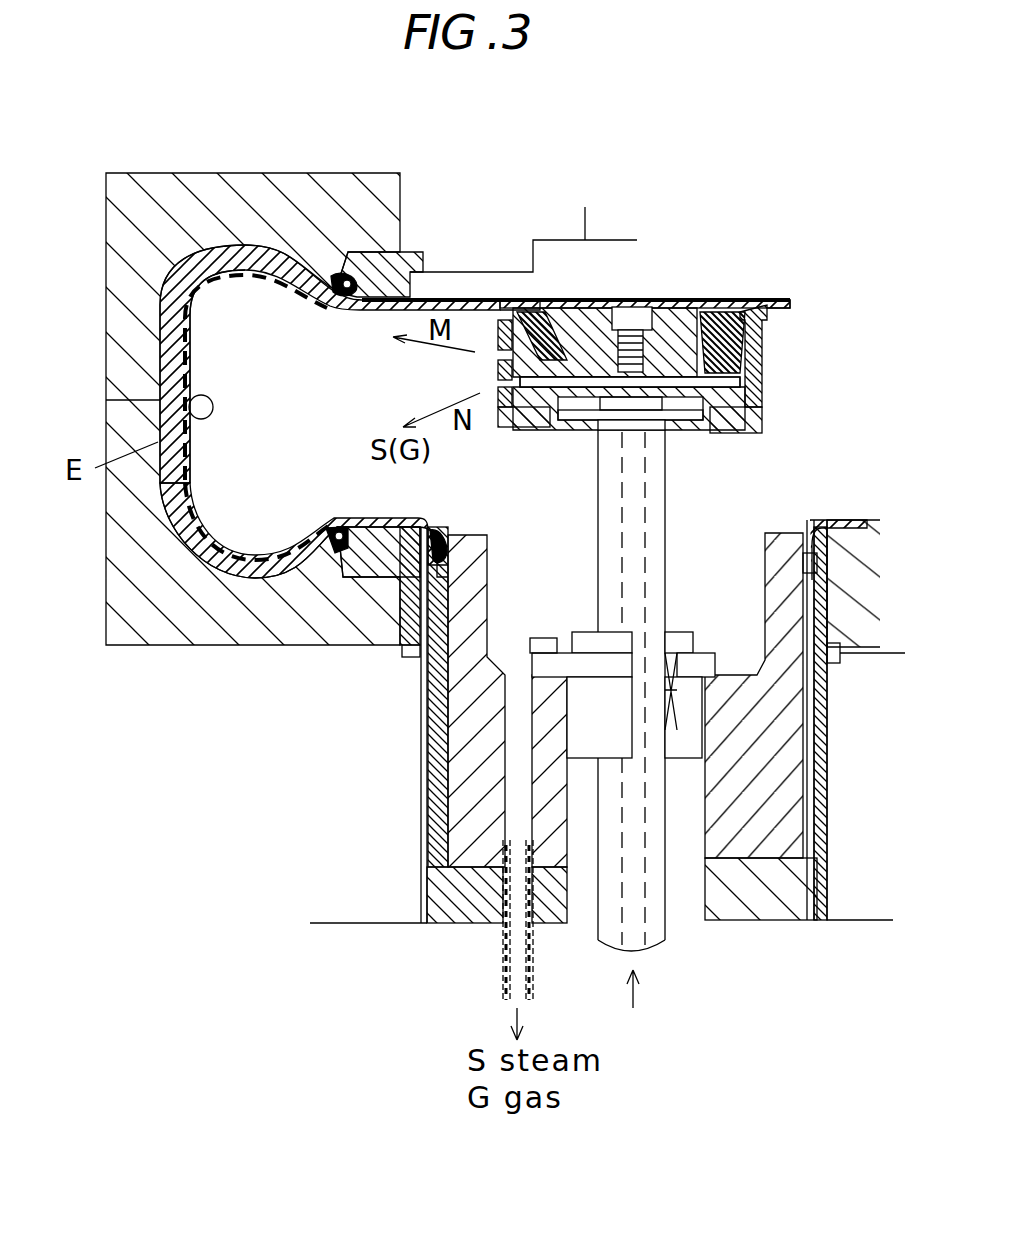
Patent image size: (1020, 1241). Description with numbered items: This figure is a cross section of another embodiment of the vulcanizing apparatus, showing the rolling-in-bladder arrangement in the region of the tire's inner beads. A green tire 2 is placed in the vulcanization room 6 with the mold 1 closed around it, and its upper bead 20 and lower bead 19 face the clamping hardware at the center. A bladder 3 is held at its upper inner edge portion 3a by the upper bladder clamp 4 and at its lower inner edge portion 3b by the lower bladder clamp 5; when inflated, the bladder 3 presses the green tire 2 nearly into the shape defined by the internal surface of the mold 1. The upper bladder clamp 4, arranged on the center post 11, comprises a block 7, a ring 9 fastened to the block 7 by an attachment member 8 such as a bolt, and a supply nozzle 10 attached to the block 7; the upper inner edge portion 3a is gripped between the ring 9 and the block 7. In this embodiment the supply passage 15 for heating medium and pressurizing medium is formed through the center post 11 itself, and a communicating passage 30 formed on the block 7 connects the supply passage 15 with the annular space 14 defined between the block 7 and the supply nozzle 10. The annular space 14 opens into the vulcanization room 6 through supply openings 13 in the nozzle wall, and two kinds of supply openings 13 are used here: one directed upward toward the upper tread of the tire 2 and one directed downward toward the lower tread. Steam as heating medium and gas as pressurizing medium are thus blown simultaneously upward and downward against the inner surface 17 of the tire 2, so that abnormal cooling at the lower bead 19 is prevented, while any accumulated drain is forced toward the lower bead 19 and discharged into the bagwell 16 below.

The mold 1 is at (157, 645).
The green tire 2 is at (237, 245).
The bladder 3 is at (287, 265).
The upper inner edge portion 3a is at (540, 298).
The lower inner edge portion 3b is at (425, 552).
The upper bladder clamp 4 is at (775, 330).
The lower bladder clamp 5 is at (495, 573).
The vulcanization room 6 is at (330, 428).
The block 7 is at (587, 305).
The attachment member 8 is at (632, 318).
The ring 9 is at (688, 310).
The supply nozzle 10 is at (760, 358).
The center post 11 is at (665, 513).
The supply openings 13 is at (497, 350).
The annular space 14 is at (727, 387).
The supply passage 15 is at (640, 880).
The bagwell 16 is at (420, 680).
The inner surface 17 is at (196, 470).
The lower bead 19 is at (340, 537).
The upper bead 20 is at (340, 262).
The communicating passage 30 is at (668, 376).